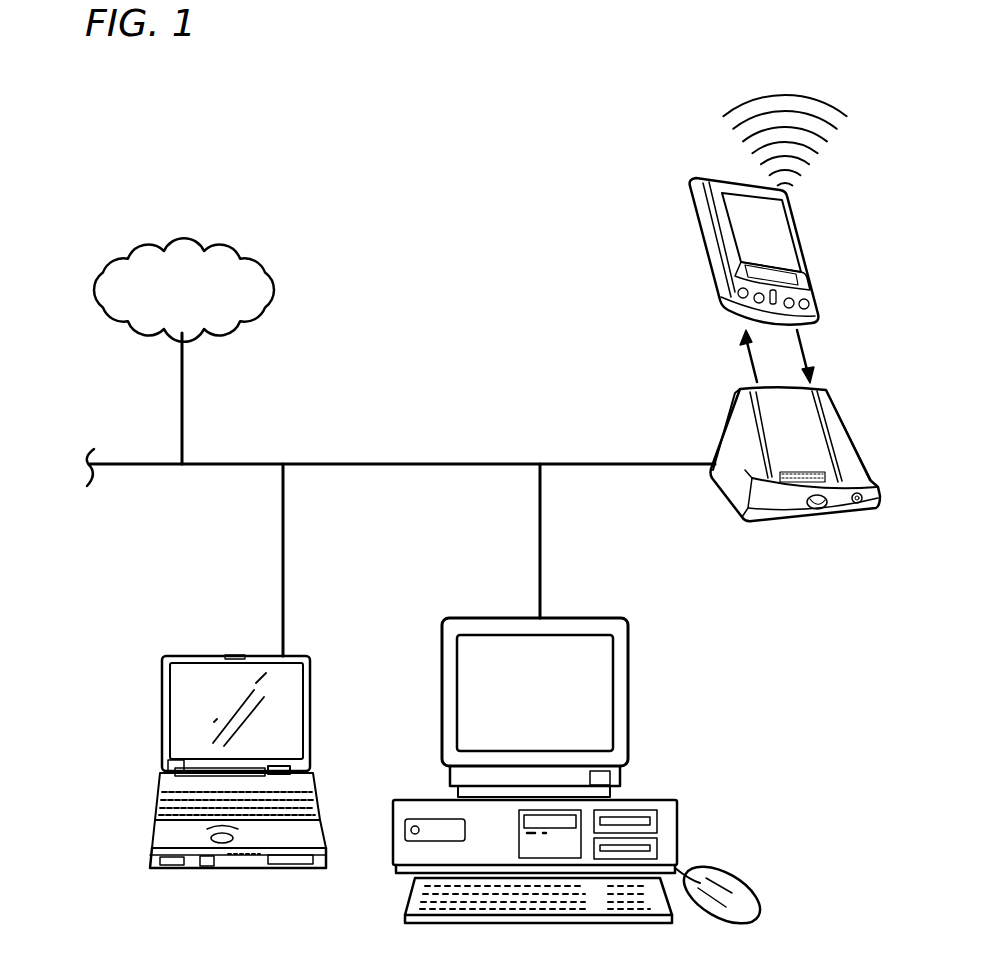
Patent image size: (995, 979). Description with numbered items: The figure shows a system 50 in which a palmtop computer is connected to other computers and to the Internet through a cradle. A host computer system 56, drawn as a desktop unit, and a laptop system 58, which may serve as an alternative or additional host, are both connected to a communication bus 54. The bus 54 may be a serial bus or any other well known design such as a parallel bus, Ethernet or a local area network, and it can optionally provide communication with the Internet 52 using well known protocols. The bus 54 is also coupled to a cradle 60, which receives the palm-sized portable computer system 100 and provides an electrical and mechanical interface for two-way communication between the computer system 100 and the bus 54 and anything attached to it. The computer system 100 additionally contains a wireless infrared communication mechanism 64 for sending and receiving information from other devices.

The system 50 is at (255, 109).
The Internet 52 is at (90, 292).
The communication bus 54 is at (343, 462).
The host computer system 56 is at (628, 681).
The laptop system 58 is at (162, 699).
The cradle 60 is at (821, 526).
The wireless infrared communication mechanism 64 is at (750, 142).
The portable computer system 100 is at (712, 211).